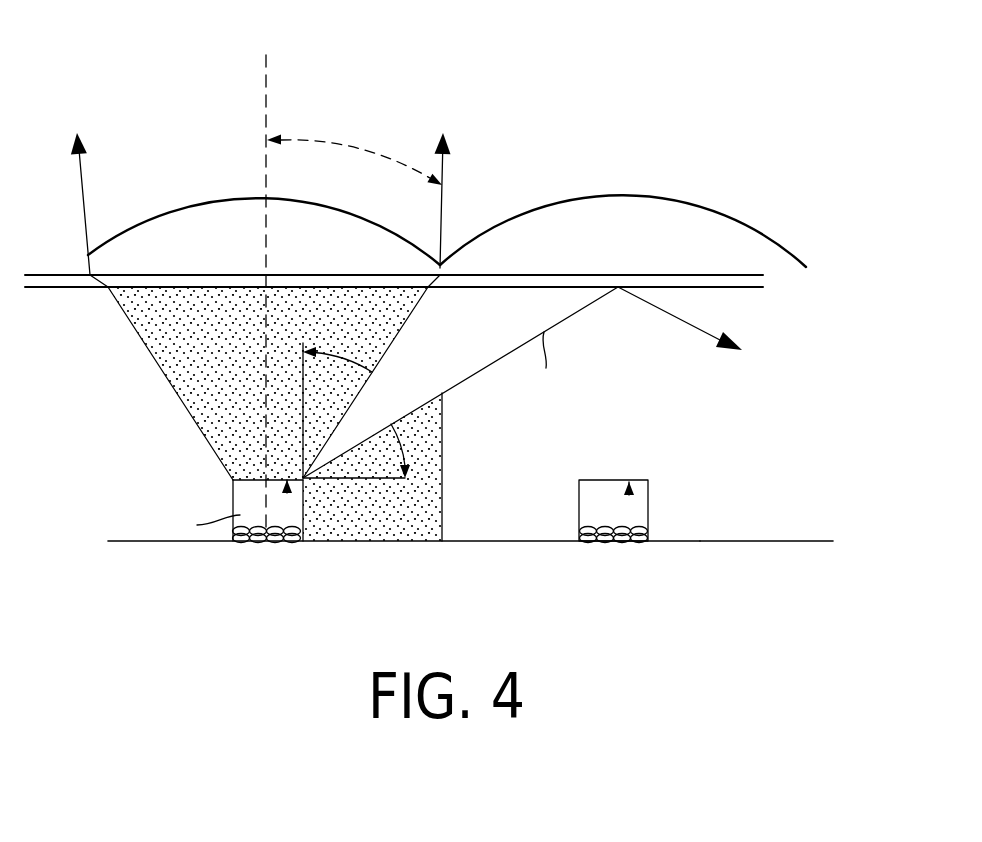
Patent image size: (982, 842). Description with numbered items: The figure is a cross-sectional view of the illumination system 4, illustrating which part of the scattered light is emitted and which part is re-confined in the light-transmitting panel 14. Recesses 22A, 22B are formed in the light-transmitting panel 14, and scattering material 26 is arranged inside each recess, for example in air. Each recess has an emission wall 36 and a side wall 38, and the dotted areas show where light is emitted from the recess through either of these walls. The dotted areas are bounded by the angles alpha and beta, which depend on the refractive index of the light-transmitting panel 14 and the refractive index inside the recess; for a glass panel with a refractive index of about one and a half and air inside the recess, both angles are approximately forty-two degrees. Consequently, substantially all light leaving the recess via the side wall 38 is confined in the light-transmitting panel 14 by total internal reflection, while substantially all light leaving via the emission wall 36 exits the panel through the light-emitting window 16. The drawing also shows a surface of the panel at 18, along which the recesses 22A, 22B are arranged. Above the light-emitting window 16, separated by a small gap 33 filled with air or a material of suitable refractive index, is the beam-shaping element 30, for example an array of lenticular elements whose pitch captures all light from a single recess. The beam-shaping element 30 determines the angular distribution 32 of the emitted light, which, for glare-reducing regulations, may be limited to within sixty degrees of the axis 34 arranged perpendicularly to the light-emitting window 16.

The illumination system 4 is at (436, 307).
The light-transmitting panel 14 is at (500, 520).
The light-emitting window 16 is at (754, 298).
The substrate surface 18 is at (790, 526).
The recess 22A is at (233, 492).
The recess 22B is at (603, 490).
The scattering material 26 is at (258, 545).
The beam-shaping element 30 is at (697, 228).
The angular distribution 32 is at (358, 152).
The gap 33 is at (495, 278).
The axis 34 is at (266, 78).
The emission wall 36 is at (287, 492).
The side wall 38 is at (303, 518).